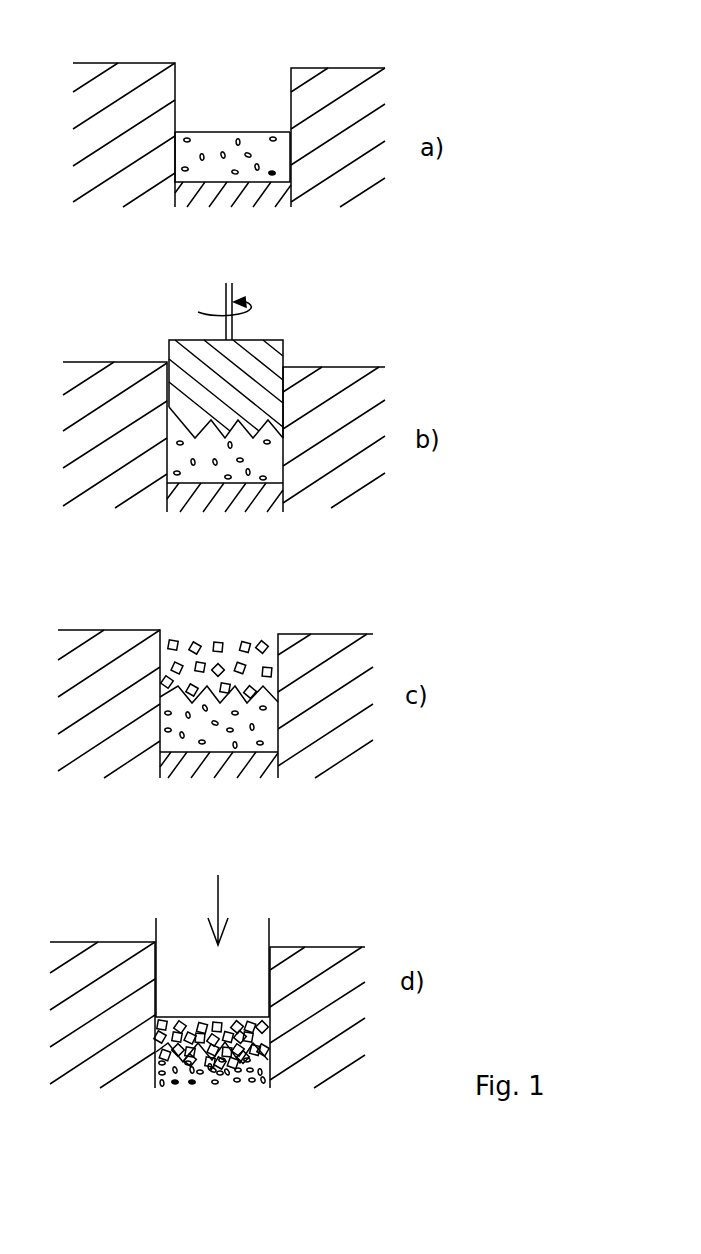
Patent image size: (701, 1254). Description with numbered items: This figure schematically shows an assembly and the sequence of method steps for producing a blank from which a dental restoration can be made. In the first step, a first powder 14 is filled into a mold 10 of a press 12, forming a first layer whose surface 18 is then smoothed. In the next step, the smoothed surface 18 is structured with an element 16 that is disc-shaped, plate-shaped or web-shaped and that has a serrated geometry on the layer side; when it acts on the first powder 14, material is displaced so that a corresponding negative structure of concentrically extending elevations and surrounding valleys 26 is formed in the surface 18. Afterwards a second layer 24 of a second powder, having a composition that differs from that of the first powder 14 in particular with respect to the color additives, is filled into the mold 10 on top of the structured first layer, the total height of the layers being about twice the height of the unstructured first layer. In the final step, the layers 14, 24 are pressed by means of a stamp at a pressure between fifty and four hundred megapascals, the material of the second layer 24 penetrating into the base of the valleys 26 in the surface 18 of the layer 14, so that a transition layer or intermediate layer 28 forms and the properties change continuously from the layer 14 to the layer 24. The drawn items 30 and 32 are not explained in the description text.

The mold 10 is at (322, 157).
The press 12 is at (459, 67).
The first powder 14 is at (197, 153).
The element 16 is at (253, 365).
The surface 18 is at (257, 132).
The second layer 24 is at (225, 665).
The valleys 26 is at (248, 695).
The transition layer 28 is at (153, 1050).
The pressing force 30 is at (230, 910).
The compacted body 32 is at (183, 1077).